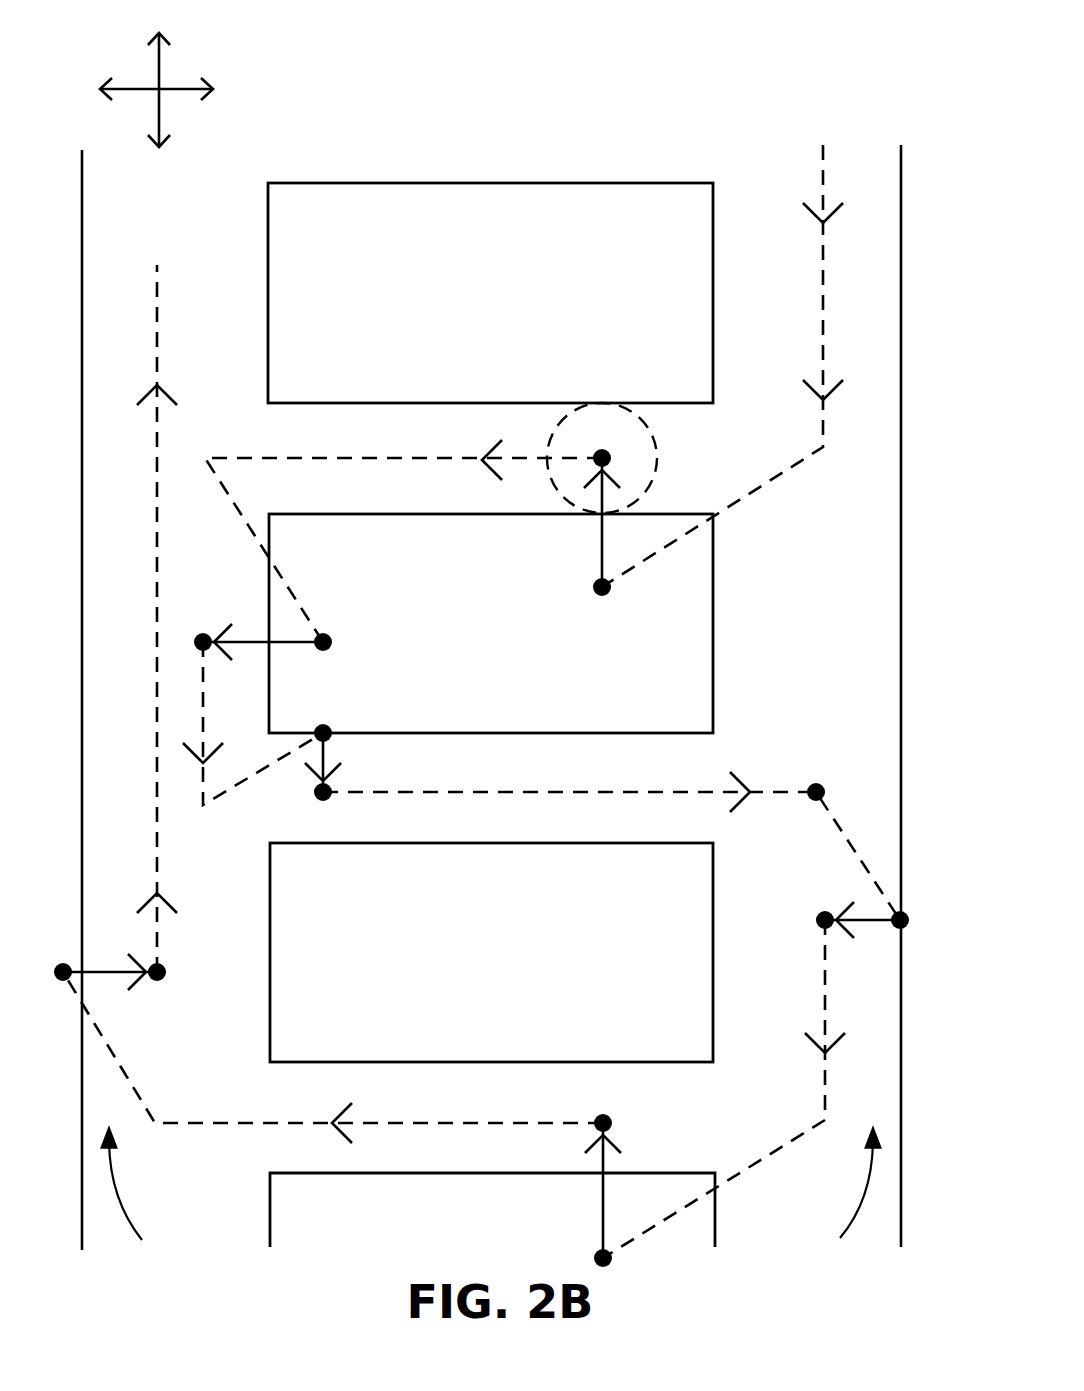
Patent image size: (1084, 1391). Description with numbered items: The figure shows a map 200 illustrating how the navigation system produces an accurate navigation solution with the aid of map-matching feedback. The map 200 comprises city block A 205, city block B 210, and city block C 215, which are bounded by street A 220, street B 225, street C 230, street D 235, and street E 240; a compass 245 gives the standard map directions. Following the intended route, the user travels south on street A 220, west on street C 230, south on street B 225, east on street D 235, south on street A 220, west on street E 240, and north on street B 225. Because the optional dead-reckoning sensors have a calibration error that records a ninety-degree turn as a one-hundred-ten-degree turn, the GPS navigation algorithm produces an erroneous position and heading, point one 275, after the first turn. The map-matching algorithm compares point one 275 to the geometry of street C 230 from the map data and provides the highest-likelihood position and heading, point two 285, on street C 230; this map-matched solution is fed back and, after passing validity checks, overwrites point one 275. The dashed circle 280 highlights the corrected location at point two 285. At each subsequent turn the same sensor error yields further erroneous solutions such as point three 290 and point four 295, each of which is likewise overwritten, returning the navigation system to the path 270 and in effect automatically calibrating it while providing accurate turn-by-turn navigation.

The map 200 is at (519, 28).
The city block A 205 is at (545, 183).
The city block B 210 is at (714, 603).
The city block C 215 is at (678, 1062).
The street A 220 is at (830, 723).
The street B 225 is at (150, 726).
The street C 230 is at (350, 422).
The street D 235 is at (490, 757).
The street E 240 is at (489, 1095).
The compass 245 is at (190, 113).
The path 270 is at (830, 165).
The Point 1 275 is at (609, 594).
The highlight circle around point 2 280 is at (655, 476).
The Point 2 285 is at (604, 454).
The Point 3 290 is at (331, 639).
The Point 4 295 is at (326, 724).